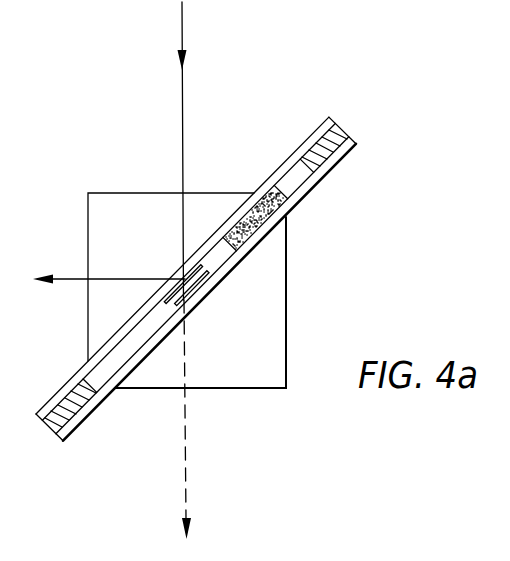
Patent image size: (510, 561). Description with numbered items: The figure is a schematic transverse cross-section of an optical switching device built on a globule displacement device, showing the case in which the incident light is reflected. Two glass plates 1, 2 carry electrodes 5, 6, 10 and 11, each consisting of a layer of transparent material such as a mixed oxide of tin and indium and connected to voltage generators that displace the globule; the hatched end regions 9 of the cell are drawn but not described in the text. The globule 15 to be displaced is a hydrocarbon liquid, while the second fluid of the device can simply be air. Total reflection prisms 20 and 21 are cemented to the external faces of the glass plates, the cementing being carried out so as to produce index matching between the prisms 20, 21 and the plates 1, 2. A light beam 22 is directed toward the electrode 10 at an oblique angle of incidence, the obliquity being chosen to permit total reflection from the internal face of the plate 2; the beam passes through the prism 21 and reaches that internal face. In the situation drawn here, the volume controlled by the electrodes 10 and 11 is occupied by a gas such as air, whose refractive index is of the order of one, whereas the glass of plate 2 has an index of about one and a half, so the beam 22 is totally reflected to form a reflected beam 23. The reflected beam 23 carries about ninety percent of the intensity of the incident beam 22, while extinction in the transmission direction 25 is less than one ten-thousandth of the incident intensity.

The plate 1 is at (106, 389).
The plate 2 is at (70, 390).
The electrode 5 is at (263, 194).
The electrode 6 is at (277, 207).
The electrodes 9 is at (341, 127).
The electrode 10 is at (193, 265).
The electrode 11 is at (210, 280).
The globule 15 is at (258, 218).
The total reflection prism 20 is at (238, 372).
The total reflection prism 21 is at (121, 203).
The light beam 22 is at (183, 31).
The reflected beam 23 is at (63, 282).
The direction 25 is at (188, 492).